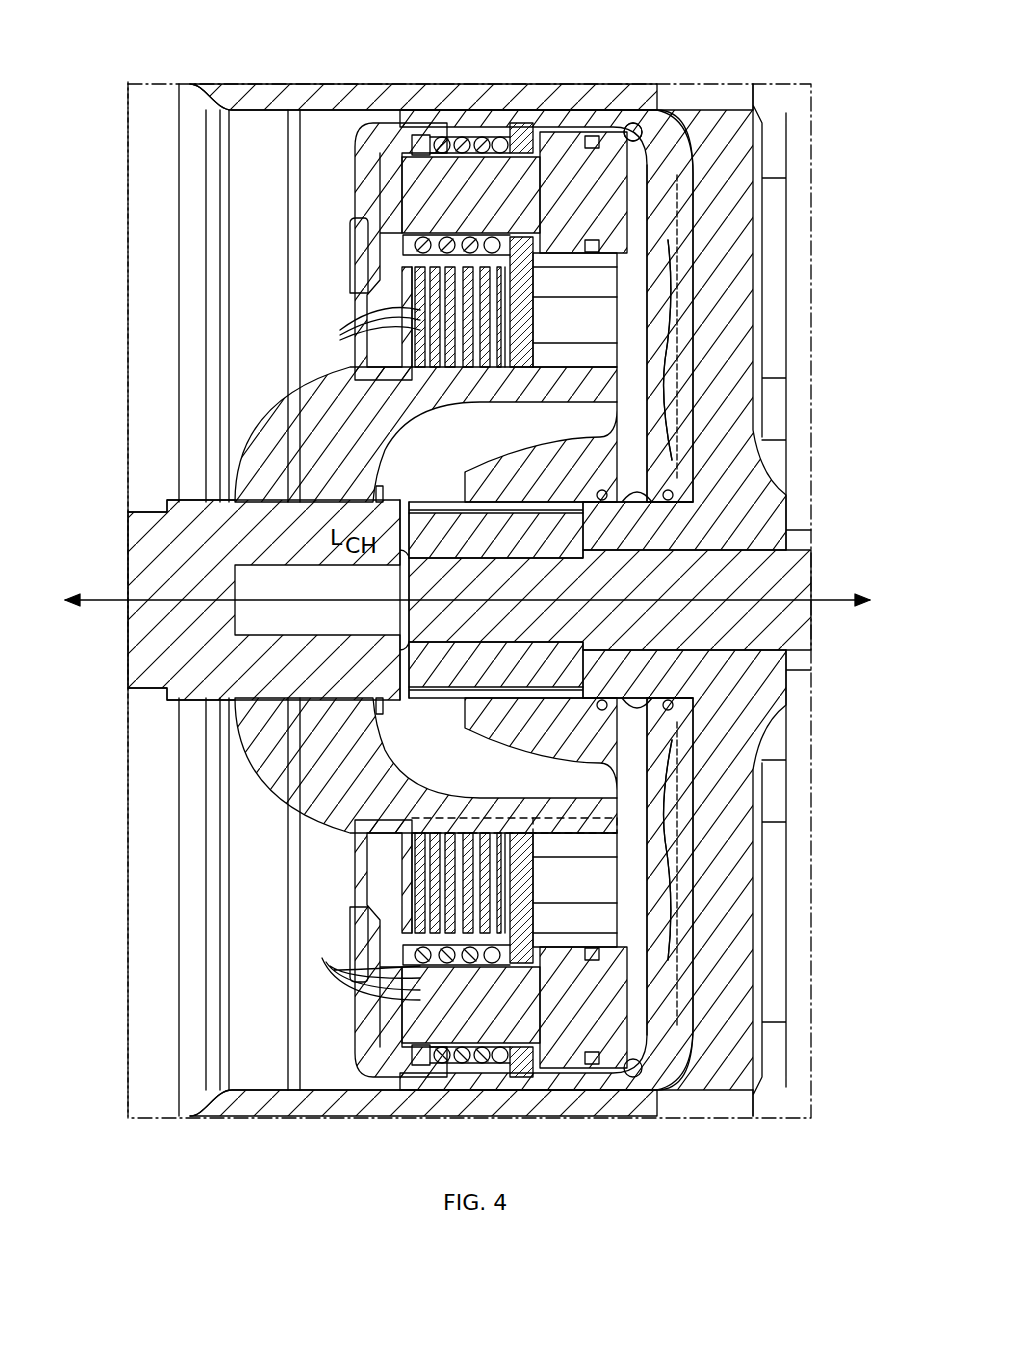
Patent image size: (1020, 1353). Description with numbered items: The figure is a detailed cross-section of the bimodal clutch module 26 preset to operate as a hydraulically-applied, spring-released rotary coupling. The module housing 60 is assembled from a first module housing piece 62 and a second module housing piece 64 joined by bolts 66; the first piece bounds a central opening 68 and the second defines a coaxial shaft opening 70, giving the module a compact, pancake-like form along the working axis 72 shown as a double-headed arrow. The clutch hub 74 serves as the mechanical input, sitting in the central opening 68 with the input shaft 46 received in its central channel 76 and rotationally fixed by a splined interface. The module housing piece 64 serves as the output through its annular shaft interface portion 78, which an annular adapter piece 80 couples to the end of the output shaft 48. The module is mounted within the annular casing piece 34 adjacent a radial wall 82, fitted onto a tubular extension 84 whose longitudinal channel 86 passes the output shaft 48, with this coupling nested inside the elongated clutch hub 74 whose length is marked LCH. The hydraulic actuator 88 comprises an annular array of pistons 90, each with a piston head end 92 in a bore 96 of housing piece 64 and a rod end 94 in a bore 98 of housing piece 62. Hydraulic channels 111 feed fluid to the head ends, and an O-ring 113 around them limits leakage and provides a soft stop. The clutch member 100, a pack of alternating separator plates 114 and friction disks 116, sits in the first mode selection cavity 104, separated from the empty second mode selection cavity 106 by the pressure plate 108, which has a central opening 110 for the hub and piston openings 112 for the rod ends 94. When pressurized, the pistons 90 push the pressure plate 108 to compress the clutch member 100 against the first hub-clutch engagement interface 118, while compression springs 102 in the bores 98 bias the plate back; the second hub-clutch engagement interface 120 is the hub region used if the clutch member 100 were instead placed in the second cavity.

The bimodal clutch module 26 is at (140, 72).
The annular casing piece 34 is at (348, 84).
The input shaft 46 is at (128, 525).
The output shaft 48 is at (800, 578).
The module housing 60 is at (355, 186).
The module housing piece 62 is at (358, 1015).
The module housing piece 64 is at (655, 1030).
The bolts 66 is at (352, 283).
The central opening 68 is at (392, 583).
The shaft opening 70 is at (465, 498).
The working axis 72 is at (145, 590).
The clutch hub 74 is at (285, 445).
The central channel 76 is at (290, 700).
The annular shaft interface portion 78 is at (527, 468).
The annular adapter piece 80 is at (452, 665).
The radial wall 82 is at (745, 262).
The tubular extension 84 is at (660, 534).
The longitudinal channel 86 is at (705, 650).
The hydraulic actuator 88 is at (612, 150).
The pistons 90 is at (563, 125).
The piston head end 92 is at (607, 204).
The rod end 94 is at (472, 204).
The bore 96 is at (640, 262).
The bore 98 is at (430, 140).
The clutch member 100 is at (420, 880).
The compression springs 102 is at (452, 140).
The first mode selection cavity 104 is at (418, 320).
The second mode selection cavity 106 is at (598, 334).
The pressure plate 108 is at (520, 905).
The central opening 110 is at (518, 367).
The hydraulic channels 111 is at (672, 337).
The piston openings 112 is at (522, 123).
The O-ring 113 is at (633, 132).
The separator plates 114 is at (359, 324).
The friction disks 116 is at (364, 967).
The first hub-clutch engagement interface 118 is at (478, 820).
The second hub-clutch engagement interface 120 is at (552, 820).